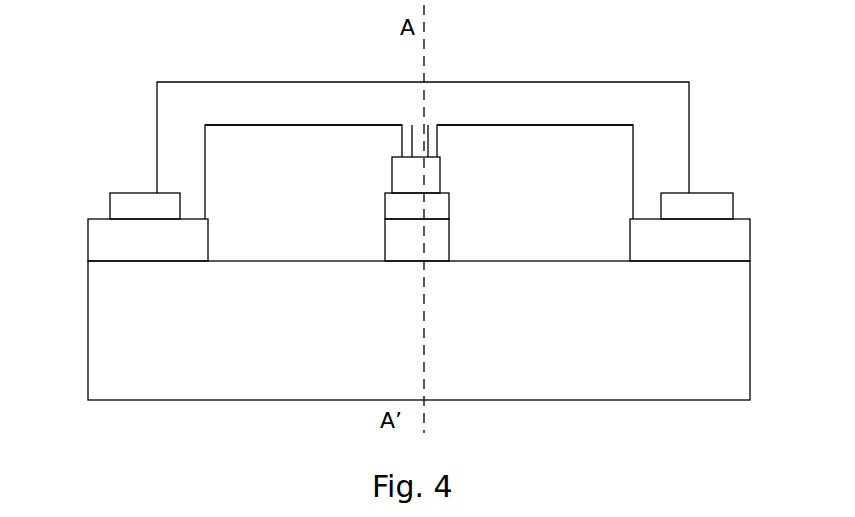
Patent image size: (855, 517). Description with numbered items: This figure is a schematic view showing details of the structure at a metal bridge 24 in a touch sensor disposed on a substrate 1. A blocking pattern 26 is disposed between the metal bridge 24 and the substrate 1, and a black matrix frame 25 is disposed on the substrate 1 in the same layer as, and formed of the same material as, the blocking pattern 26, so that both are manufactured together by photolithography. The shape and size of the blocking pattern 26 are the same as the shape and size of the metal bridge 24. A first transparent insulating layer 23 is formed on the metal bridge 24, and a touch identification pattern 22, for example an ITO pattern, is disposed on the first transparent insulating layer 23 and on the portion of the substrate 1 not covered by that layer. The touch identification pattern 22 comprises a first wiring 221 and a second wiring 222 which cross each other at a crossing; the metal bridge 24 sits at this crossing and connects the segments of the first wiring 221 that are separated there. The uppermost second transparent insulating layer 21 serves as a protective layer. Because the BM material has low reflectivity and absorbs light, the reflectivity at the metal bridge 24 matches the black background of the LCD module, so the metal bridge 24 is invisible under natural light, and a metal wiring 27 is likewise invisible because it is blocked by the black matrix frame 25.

The substrate 1 is at (114, 331).
The second transparent insulating layer 21 is at (525, 98).
The touch identification pattern 22 is at (232, 122).
The first wiring 221 is at (288, 138).
The second wiring 222 is at (420, 128).
The first transparent insulating layer 23 is at (430, 172).
The metal bridge 24 is at (437, 205).
The black matrix frame 25 is at (113, 242).
The blocking pattern 26 is at (437, 240).
The metal wiring 27 is at (128, 205).